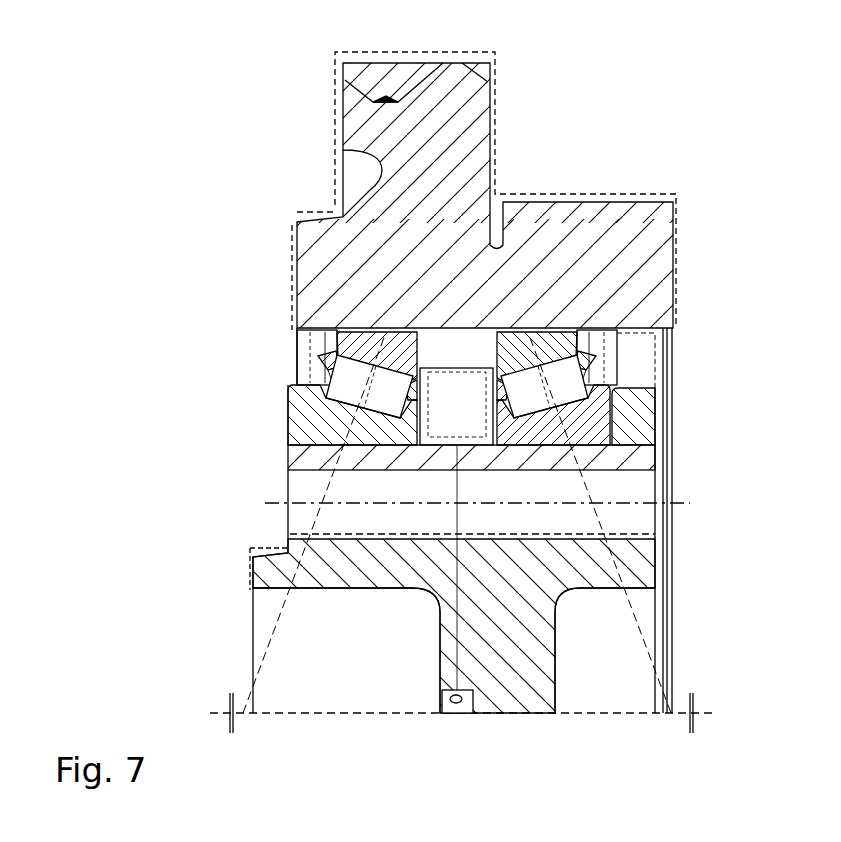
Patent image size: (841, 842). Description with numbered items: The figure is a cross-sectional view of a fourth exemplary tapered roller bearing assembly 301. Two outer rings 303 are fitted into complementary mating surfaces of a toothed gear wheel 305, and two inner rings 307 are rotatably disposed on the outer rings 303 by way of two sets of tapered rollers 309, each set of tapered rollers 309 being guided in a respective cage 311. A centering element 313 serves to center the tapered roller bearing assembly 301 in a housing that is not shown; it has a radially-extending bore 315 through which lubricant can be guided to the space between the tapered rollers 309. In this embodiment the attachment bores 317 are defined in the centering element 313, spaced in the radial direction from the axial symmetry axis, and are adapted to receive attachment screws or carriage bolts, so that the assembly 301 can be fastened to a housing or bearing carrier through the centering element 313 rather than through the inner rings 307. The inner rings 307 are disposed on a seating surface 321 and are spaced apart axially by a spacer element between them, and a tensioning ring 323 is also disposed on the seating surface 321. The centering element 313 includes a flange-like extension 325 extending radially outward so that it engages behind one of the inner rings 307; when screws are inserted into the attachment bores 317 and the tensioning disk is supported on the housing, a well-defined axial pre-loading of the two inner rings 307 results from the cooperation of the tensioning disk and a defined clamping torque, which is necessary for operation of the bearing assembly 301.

The tapered roller bearing assembly 301 is at (236, 133).
The outer rings 303 is at (358, 338).
The toothed gear wheel 305 is at (545, 248).
The inner rings 307 is at (326, 398).
The tapered rollers 309 is at (348, 384).
The cages 311 is at (342, 352).
The centering element 313 is at (290, 576).
The radially-extending bore 315 is at (455, 718).
The attachment bores 317 is at (600, 517).
The seating surface 321 is at (327, 447).
The tensioning ring 323 is at (292, 426).
The flange-like extension 325 is at (633, 427).